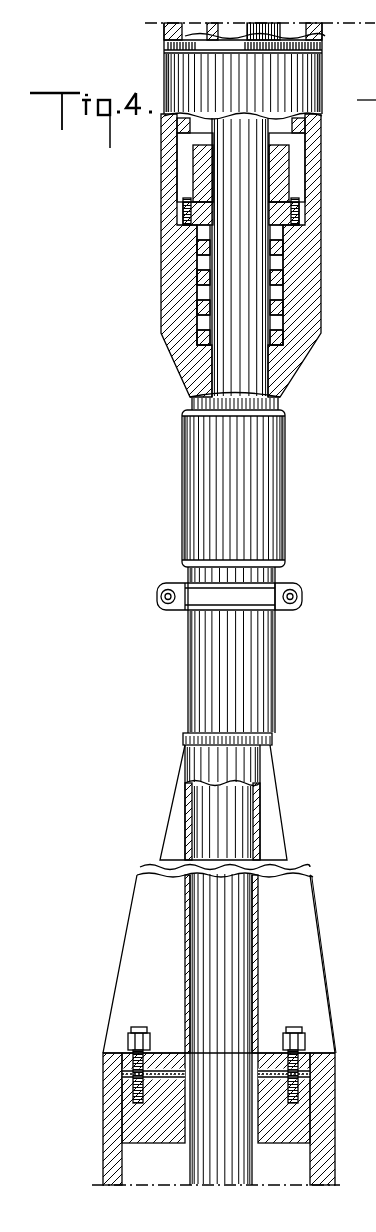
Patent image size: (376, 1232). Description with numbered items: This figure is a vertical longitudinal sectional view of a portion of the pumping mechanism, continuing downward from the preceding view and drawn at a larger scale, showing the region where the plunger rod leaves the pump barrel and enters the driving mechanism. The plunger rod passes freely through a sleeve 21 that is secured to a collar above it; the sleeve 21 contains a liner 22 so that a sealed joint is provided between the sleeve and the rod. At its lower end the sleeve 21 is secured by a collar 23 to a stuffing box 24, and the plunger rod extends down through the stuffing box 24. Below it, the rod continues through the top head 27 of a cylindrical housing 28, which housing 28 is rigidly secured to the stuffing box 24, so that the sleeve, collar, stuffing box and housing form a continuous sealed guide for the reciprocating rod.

The sleeve 21 is at (323, 29).
The liner 22 is at (210, 34).
The collar 23 is at (310, 80).
The stuffing box 24 is at (280, 312).
The top head 27 is at (317, 1066).
The cylindrical housing 28 is at (317, 1165).